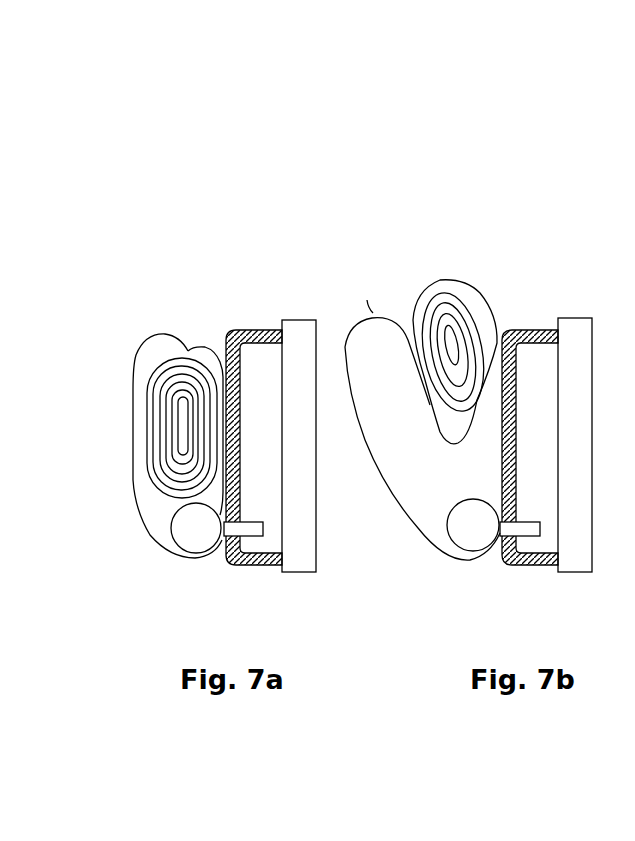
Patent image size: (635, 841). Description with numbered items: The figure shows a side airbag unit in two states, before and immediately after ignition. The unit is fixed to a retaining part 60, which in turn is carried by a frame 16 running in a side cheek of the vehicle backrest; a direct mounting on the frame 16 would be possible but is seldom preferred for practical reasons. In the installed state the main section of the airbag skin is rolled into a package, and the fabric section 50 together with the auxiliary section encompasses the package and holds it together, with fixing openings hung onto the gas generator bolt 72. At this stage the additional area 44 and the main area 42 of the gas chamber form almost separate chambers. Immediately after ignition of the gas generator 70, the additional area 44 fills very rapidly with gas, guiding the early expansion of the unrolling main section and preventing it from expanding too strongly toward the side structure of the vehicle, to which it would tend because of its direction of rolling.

In FIG. 7a, the frame 16 is at (298, 557).
In FIG. 7b, the frame 16 is at (575, 445).
In FIG. 7a, the main area 42 is at (220, 460).
In FIG. 7b, the main area 42 is at (478, 318).
In FIG. 7a, the additional area 44 is at (138, 427).
In FIG. 7b, the additional area 44 is at (417, 483).
In FIG. 7a, the fabric section 50 is at (203, 347).
In FIG. 7a, the retaining part 60 is at (260, 330).
In FIG. 7b, the retaining part 60 is at (530, 447).
In FIG. 7a, the gas generator 70 is at (197, 538).
In FIG. 7b, the gas generator 70 is at (473, 525).
In FIG. 7a, the gas generator bolt 72 is at (248, 532).
In FIG. 7b, the gas generator bolt 72 is at (520, 529).